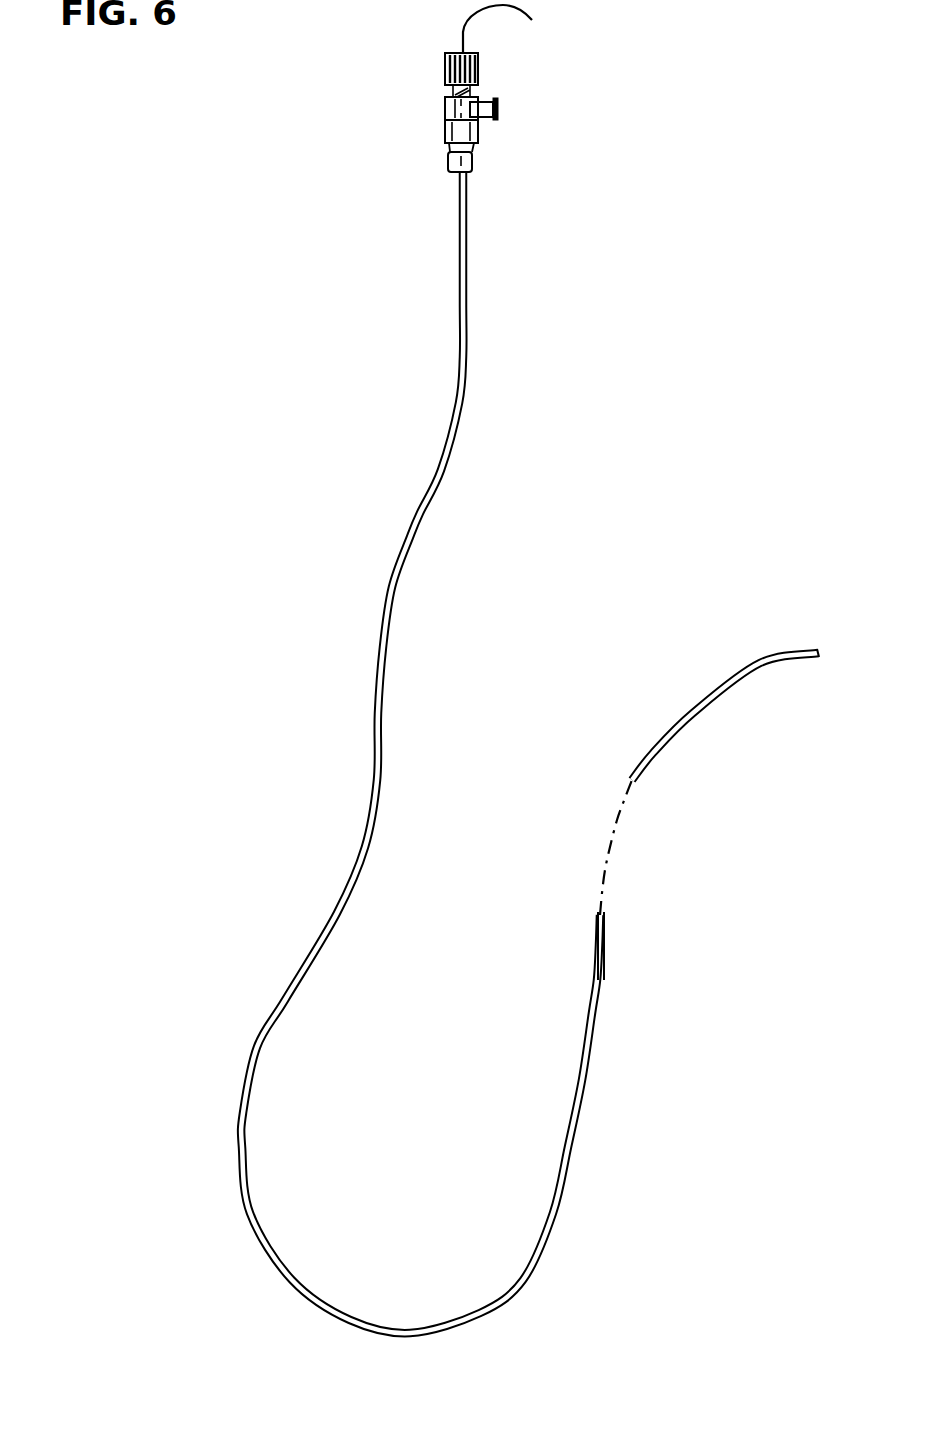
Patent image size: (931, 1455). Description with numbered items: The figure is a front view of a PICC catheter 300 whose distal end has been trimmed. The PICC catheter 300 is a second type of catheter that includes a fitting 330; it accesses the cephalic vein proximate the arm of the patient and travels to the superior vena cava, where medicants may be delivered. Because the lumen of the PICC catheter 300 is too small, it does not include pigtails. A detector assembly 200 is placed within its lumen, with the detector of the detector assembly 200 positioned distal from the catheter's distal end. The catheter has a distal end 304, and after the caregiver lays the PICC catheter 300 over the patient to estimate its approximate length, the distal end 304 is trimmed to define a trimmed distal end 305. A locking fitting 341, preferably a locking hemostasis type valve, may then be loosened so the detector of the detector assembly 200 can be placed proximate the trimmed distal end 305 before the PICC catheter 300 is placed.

The detector assembly 200 is at (465, 25).
The PICC catheter 300 is at (432, 527).
The distal end 304 is at (820, 650).
The trimmed distal end 305 is at (603, 918).
The fitting 330 is at (478, 70).
The locking fitting 341 is at (447, 96).